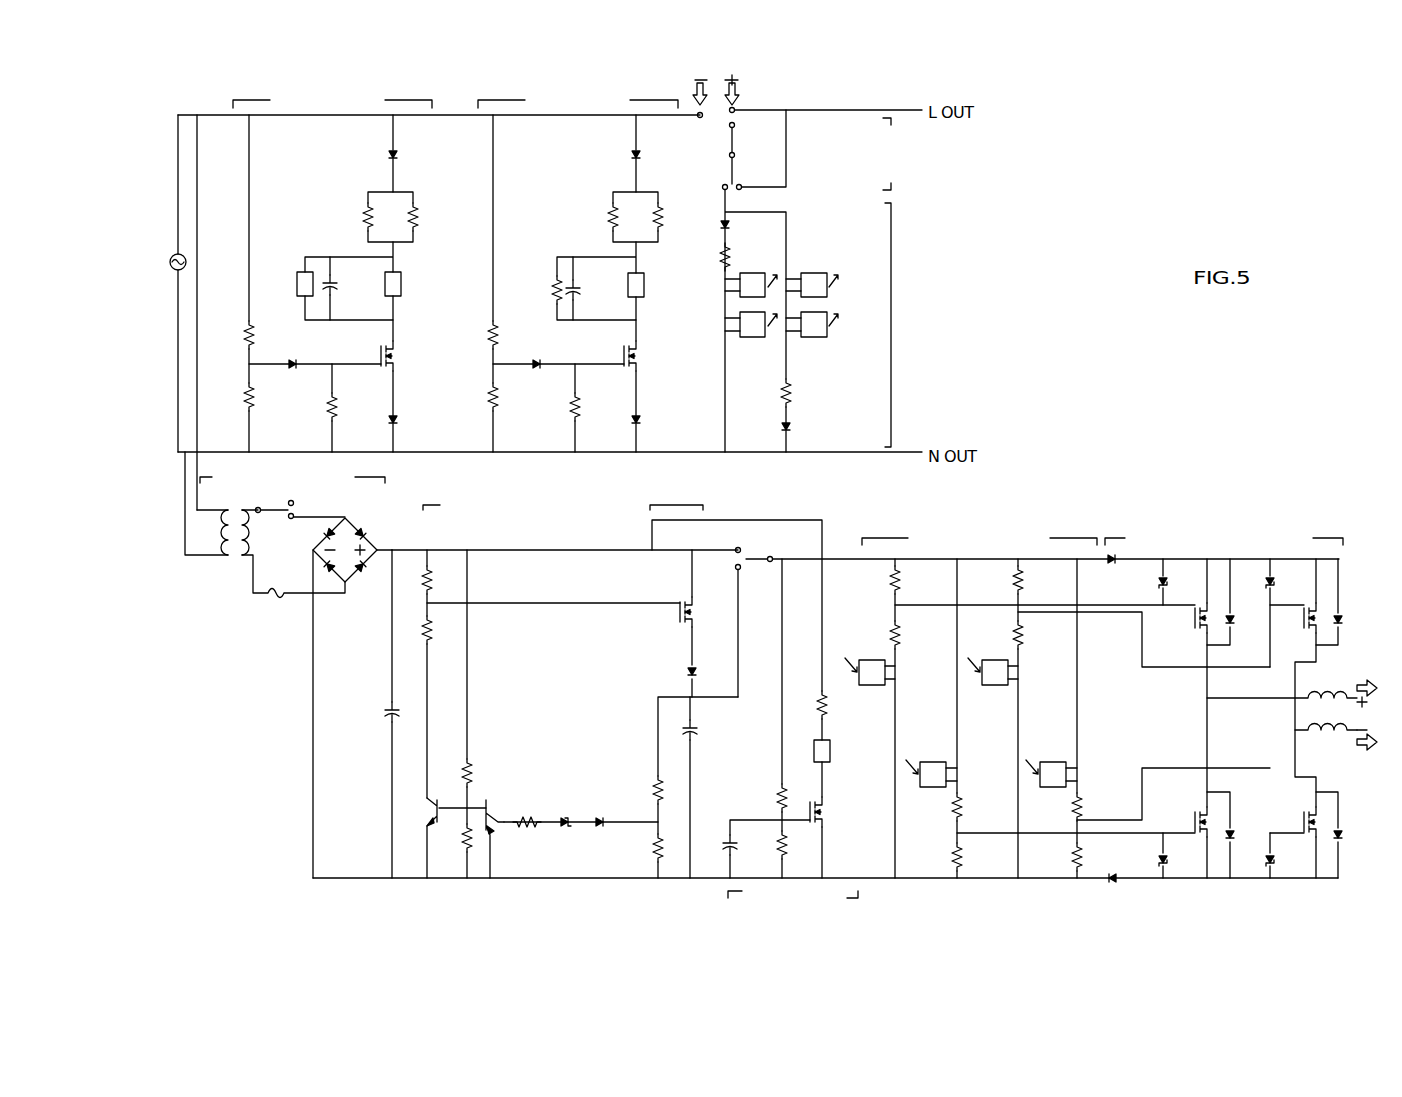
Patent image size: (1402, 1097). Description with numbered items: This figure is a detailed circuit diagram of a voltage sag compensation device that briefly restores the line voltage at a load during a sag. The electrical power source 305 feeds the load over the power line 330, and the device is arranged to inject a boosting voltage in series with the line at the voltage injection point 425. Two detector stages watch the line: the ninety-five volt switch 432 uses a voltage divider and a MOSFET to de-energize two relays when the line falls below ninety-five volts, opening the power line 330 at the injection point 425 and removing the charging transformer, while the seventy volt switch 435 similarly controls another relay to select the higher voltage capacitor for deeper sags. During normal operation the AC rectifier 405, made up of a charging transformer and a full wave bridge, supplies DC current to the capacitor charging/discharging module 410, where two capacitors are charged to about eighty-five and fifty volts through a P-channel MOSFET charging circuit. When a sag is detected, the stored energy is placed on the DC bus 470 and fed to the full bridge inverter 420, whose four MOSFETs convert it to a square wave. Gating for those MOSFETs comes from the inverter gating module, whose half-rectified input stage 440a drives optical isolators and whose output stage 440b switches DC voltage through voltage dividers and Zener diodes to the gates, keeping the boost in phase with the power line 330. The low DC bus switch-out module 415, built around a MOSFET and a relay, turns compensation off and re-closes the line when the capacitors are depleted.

The electrical power source 305 is at (187, 262).
The power line 330 is at (460, 115).
The 95 volt switch 432 is at (410, 97).
The 70 volt switch 435 is at (643, 102).
The voltage injection point 425 is at (752, 78).
The AC rectifier 405 is at (372, 477).
The capacitor charging/discharging module 410 is at (673, 505).
The DC bus 470 is at (840, 558).
The inverter gating module 440a is at (891, 372).
The inverter gating module 440b is at (1063, 540).
The inverter 420 is at (1318, 540).
The low DC bus switch-out module 415 is at (858, 893).